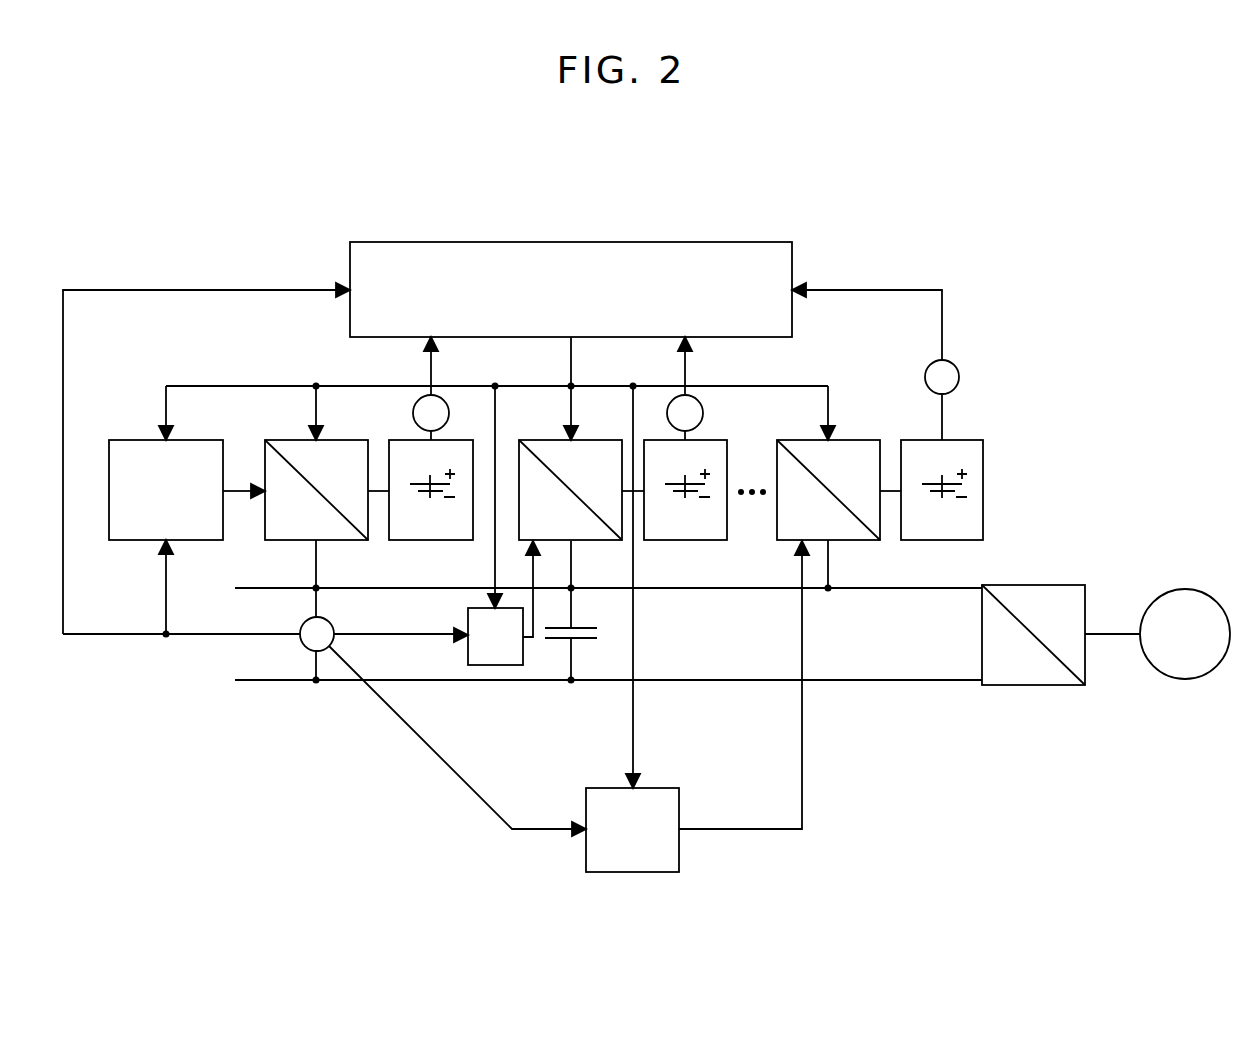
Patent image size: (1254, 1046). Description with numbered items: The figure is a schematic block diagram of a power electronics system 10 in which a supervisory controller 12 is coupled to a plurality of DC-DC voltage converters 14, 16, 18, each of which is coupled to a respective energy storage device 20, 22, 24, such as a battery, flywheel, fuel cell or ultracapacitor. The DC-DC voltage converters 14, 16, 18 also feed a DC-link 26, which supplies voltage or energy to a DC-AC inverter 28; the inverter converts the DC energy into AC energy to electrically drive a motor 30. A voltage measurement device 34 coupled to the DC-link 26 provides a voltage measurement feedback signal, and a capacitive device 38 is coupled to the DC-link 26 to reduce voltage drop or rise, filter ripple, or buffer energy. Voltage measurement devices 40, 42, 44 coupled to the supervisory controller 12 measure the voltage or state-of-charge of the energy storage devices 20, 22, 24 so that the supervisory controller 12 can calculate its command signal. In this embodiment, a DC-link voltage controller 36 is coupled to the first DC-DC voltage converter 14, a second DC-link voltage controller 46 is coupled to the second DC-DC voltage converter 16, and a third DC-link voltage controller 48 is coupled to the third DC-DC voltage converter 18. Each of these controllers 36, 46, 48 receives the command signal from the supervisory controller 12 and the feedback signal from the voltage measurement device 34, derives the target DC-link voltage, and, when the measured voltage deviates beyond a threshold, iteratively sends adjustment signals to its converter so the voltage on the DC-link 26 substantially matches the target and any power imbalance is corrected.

The power electronics system 10 is at (494, 157).
The supervisory controller 12 is at (605, 241).
The DC-DC voltage converter 14 is at (290, 440).
The second DC-DC voltage converter 16 is at (560, 440).
The third DC-DC voltage converter 18 is at (864, 440).
The energy storage device 20 is at (417, 540).
The energy storage device 22 is at (698, 541).
The energy storage device 24 is at (965, 540).
The DC-link 26 is at (693, 590).
The DC-AC inverter 28 is at (1083, 585).
The motor 30 is at (1207, 590).
The voltage measurement device 34 is at (306, 652).
The DC-link voltage controller 36 is at (137, 440).
The capacitive device 38 is at (577, 642).
The voltage measurement device 40 is at (412, 426).
The voltage measurement device 42 is at (704, 427).
The voltage measurement device 44 is at (953, 388).
The second DC-link voltage controller 46 is at (468, 642).
The third DC-link voltage controller 48 is at (665, 788).